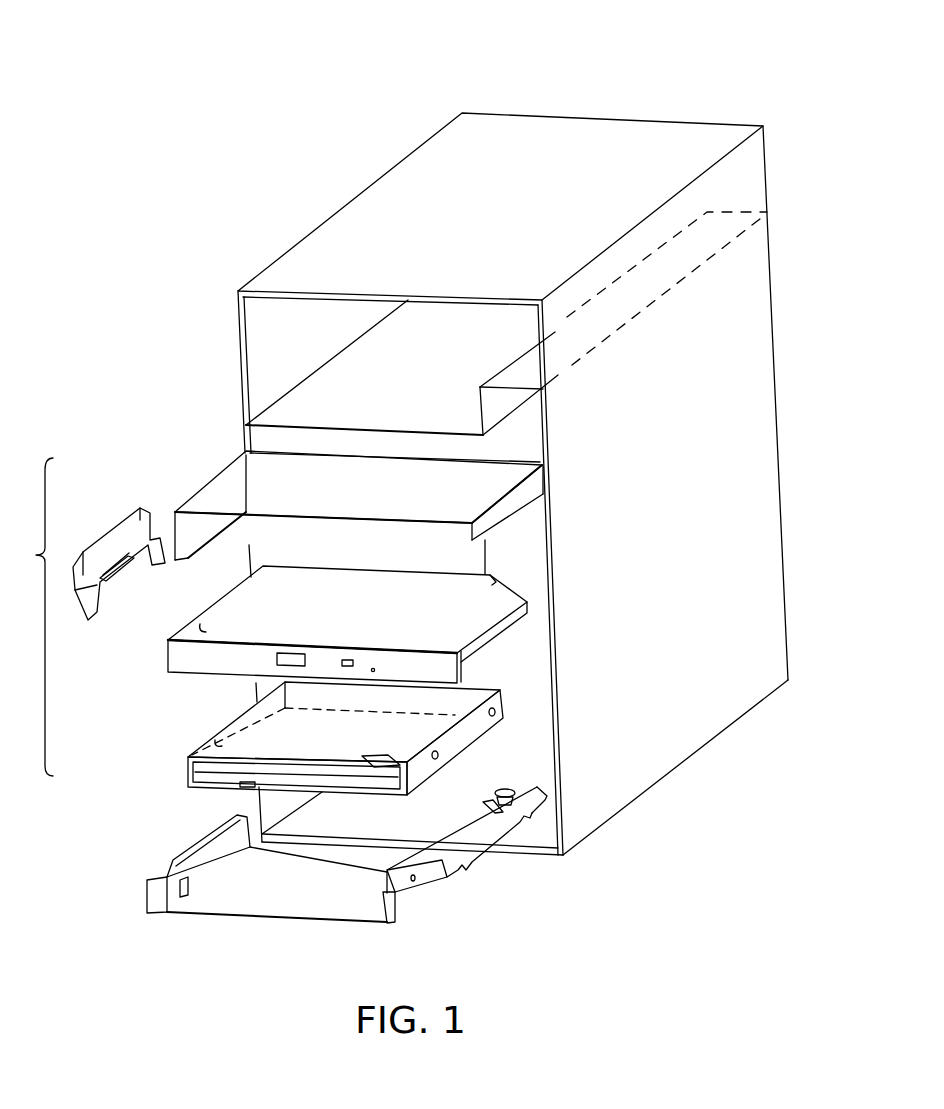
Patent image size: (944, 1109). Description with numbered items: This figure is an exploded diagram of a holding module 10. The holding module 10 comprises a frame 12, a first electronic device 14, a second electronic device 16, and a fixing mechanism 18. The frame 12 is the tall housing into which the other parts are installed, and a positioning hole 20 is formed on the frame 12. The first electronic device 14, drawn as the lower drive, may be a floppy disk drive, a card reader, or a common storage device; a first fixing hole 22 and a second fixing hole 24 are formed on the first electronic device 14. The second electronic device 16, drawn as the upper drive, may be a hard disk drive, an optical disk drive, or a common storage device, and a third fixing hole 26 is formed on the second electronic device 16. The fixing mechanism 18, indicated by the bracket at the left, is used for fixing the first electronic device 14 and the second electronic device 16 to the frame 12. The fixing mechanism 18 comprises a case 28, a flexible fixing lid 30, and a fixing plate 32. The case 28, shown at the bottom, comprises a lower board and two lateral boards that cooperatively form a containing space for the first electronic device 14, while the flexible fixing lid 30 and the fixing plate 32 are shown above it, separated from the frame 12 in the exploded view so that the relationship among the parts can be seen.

The holding module 10 is at (203, 98).
The frame 12 is at (630, 757).
The first electronic device 14 is at (245, 722).
The second electronic device 16 is at (467, 608).
The fixing mechanism 18 is at (27, 617).
The positioning hole 20 is at (610, 297).
The first fixing hole 22 is at (438, 757).
The second fixing hole 24 is at (215, 742).
The third fixing hole 26 is at (200, 628).
The case 28 is at (207, 843).
The flexible fixing lid 30 is at (238, 483).
The fixing plate 32 is at (118, 547).